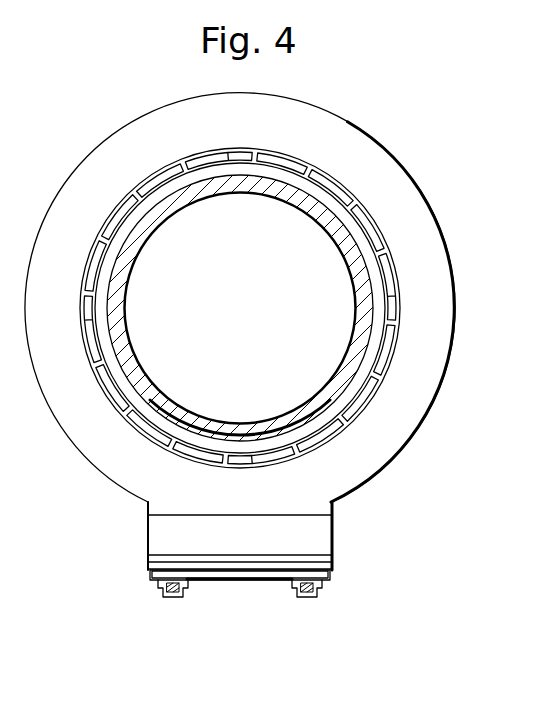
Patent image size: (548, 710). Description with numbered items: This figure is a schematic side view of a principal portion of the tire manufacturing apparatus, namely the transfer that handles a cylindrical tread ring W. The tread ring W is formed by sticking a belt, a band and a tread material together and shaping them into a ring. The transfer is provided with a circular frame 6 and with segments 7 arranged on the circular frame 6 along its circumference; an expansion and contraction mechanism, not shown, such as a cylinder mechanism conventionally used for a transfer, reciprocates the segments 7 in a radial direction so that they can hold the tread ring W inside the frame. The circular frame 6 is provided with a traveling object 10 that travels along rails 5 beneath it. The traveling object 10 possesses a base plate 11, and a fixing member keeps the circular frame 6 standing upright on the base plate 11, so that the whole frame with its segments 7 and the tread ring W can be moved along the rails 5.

The rails 5 is at (172, 597).
The circular frame 6 is at (458, 270).
The segments 7 is at (323, 175).
The traveling object 10 is at (334, 571).
The base plate 11 is at (245, 579).
The tread ring W is at (340, 247).